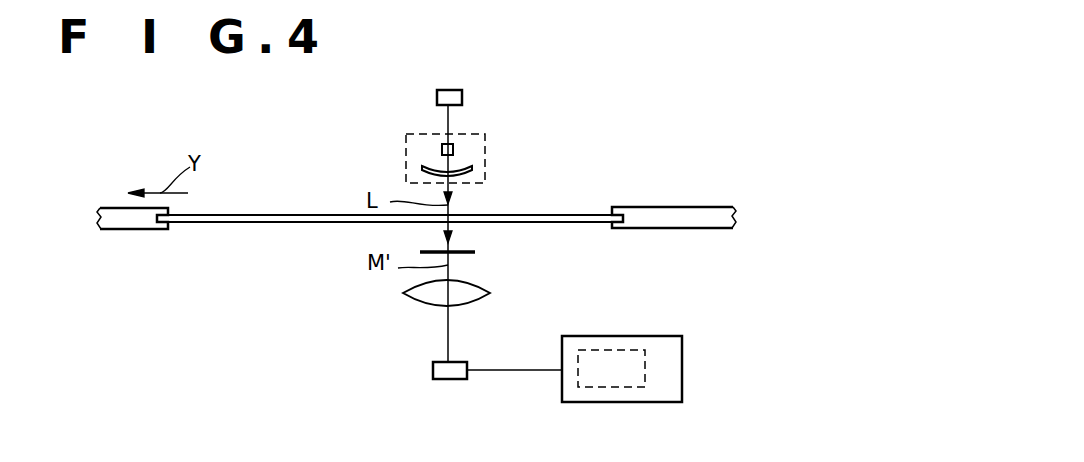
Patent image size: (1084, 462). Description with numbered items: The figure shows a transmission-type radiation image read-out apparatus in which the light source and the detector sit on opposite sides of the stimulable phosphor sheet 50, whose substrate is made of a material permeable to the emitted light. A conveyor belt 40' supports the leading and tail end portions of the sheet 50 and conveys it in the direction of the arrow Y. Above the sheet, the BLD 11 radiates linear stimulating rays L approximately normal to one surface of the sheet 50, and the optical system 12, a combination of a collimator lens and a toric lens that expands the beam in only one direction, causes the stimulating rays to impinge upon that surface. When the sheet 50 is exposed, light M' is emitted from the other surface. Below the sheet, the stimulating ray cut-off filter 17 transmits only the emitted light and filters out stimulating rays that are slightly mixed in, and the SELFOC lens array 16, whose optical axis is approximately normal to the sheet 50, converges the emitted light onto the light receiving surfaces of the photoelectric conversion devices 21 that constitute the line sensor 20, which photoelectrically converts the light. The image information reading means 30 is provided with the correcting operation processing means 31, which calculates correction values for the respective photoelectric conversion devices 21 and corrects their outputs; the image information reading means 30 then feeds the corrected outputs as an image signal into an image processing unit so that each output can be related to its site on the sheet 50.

The BLD 11 is at (462, 92).
The optical system 12 is at (466, 134).
The stimulable phosphor sheet 50 is at (552, 215).
The conveyor belt 40' is at (136, 241).
The stimulating ray cut-off filter 17 is at (475, 252).
The SELFOC lens array 16 is at (480, 292).
The line sensor 20 is at (438, 362).
The photoelectric conversion devices 21 is at (433, 371).
The image information reading means 30 is at (633, 347).
The correcting operation processing means 31 is at (611, 368).